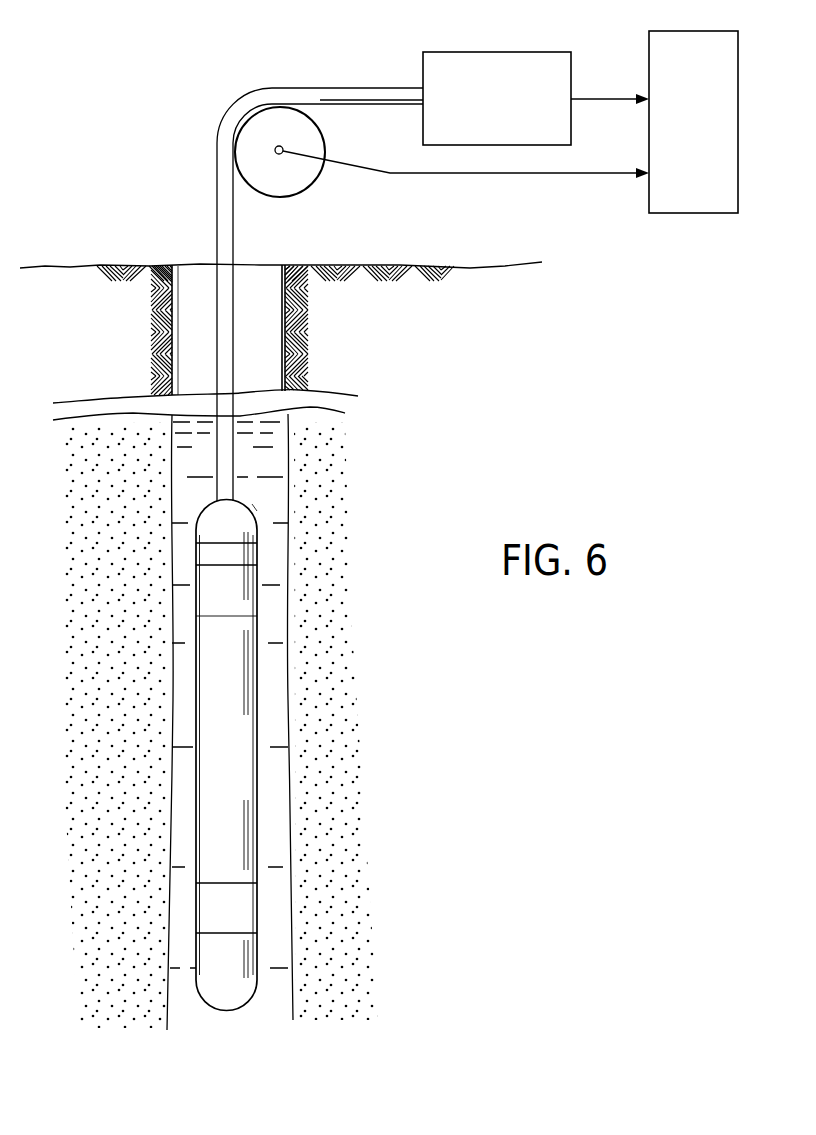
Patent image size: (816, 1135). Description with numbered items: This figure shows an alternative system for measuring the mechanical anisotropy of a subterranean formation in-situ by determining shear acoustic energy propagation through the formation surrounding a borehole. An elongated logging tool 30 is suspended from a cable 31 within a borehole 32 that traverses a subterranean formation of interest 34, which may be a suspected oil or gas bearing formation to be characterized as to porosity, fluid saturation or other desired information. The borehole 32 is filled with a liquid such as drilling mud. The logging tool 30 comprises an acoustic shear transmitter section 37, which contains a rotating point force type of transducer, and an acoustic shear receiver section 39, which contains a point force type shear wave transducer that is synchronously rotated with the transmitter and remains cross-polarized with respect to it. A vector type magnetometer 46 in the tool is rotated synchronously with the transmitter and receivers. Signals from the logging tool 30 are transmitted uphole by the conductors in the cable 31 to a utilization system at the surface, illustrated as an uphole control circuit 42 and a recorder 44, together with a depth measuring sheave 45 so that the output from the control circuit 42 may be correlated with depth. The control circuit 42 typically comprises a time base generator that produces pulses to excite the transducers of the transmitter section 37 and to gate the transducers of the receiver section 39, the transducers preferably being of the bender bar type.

The logging tool 30 is at (296, 754).
The cable 31 is at (215, 458).
The borehole 32 is at (279, 507).
The subterranean formation 34 is at (405, 690).
The acoustic shear transmitter section 37 is at (257, 597).
The acoustic shear receiver section 39 is at (257, 915).
The uphole control circuit 42 is at (513, 52).
The recorder 44 is at (683, 29).
The depth measuring sheave 45 is at (313, 185).
The vector type magnetometer 46 is at (257, 555).